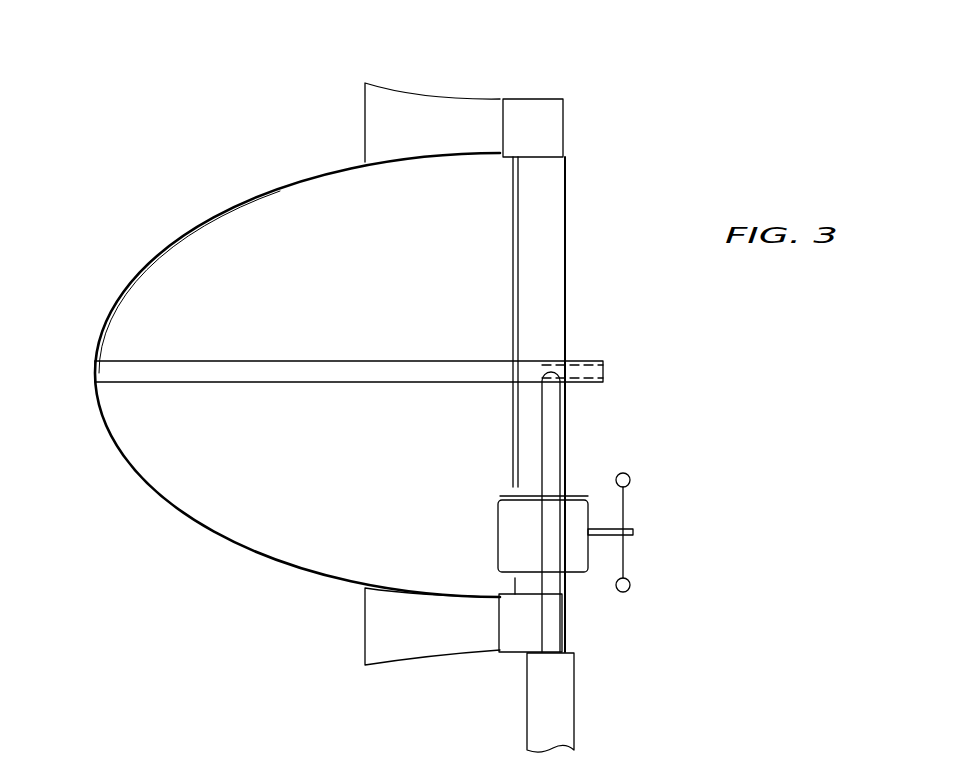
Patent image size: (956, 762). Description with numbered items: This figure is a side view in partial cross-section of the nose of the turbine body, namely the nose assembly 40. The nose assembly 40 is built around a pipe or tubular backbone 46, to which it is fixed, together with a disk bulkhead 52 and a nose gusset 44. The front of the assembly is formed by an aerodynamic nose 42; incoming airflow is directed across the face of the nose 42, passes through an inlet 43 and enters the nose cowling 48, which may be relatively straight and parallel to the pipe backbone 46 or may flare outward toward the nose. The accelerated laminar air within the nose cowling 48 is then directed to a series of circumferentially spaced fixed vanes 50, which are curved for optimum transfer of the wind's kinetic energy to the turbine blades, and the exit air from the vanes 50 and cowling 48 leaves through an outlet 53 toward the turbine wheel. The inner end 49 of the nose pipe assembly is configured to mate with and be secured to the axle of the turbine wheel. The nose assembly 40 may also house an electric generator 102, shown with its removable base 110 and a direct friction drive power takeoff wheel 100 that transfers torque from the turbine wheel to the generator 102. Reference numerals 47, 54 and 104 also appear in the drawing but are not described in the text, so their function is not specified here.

The nose assembly 40 is at (204, 158).
The aerodynamic nose 42 is at (215, 448).
The inlet 43 is at (350, 121).
The nose gusset 44 is at (100, 340).
The pipe backbone 46 is at (222, 380).
The bar tip 47 is at (105, 372).
The nose cowling 48 is at (407, 88).
The inner end 49 is at (605, 373).
The fixed vanes 50 is at (533, 120).
The disk bulkhead 52 is at (516, 258).
The outlet 53 is at (587, 123).
The rail top 54 is at (538, 158).
The power takeoff wheel 100 is at (627, 505).
The electric generator 102 is at (532, 537).
The strap 104 is at (550, 386).
The removable base 110 is at (558, 700).